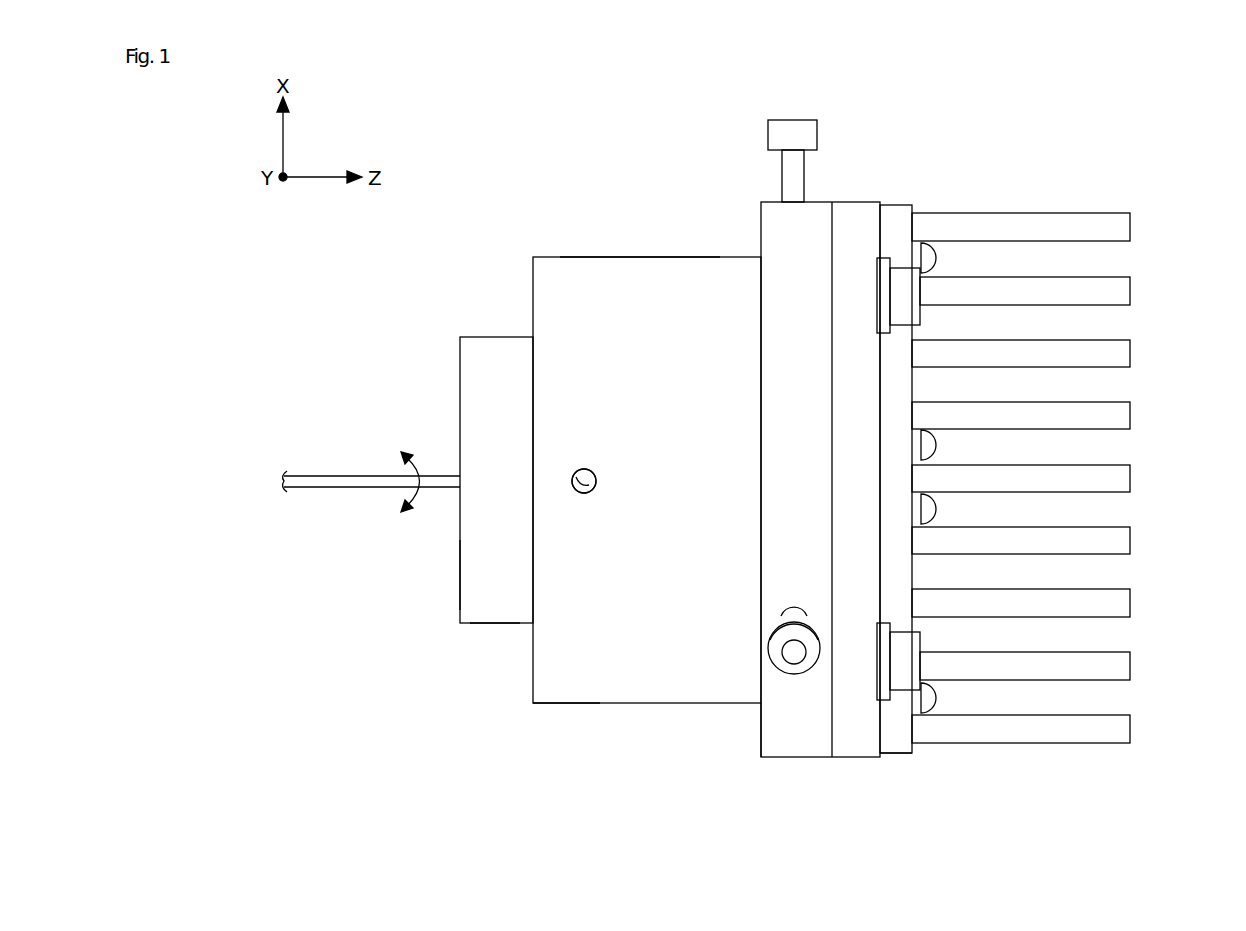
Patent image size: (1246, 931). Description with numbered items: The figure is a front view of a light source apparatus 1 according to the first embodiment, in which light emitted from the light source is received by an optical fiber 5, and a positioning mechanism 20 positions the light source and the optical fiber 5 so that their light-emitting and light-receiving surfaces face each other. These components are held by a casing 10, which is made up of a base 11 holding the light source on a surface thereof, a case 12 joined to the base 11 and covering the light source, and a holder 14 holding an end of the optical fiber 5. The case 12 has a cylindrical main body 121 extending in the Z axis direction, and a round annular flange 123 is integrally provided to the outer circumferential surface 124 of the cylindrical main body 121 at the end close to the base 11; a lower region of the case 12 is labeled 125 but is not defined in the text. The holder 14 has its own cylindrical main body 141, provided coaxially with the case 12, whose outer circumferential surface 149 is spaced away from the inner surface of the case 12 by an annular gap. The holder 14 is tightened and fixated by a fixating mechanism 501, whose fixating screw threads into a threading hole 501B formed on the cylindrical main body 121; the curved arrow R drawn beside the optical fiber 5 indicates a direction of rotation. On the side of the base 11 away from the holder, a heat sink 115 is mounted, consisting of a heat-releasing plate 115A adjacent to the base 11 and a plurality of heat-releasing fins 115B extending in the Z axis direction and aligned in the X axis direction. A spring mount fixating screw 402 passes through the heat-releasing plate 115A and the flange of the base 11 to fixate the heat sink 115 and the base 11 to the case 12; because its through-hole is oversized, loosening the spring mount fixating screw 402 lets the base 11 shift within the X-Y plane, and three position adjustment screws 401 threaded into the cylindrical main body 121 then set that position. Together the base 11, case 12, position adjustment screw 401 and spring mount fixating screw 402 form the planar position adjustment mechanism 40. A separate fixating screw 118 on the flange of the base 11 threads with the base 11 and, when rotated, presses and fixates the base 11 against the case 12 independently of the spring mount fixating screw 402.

The light source apparatus 1 is at (518, 224).
The casing 10 is at (560, 242).
The case 12 is at (533, 274).
The holder 14 is at (460, 345).
The optical fiber 5 is at (337, 476).
The rotation direction R is at (414, 455).
The fixating mechanism 501 is at (594, 460).
The threading hole 501B is at (579, 492).
The base 11 is at (864, 204).
The heat sink 115 is at (898, 205).
The heat-releasing plate 115A is at (896, 746).
The heat-releasing fins 115B is at (1130, 232).
The fixating screw 118 is at (920, 325).
The cylindrical main body 121 is at (640, 265).
The outer circumferential surface 124 is at (599, 256).
The bottom surface 125 is at (533, 688).
The annular flange 123 is at (761, 738).
The cylindrical main body 141 is at (472, 576).
The outer circumferential surface 149 is at (492, 628).
The planar position adjustment mechanism 40 is at (777, 108).
The positioning mechanism 20 is at (802, 108).
The position adjustment screw 401 is at (770, 131).
The spring mount fixating screw 402 is at (936, 262).